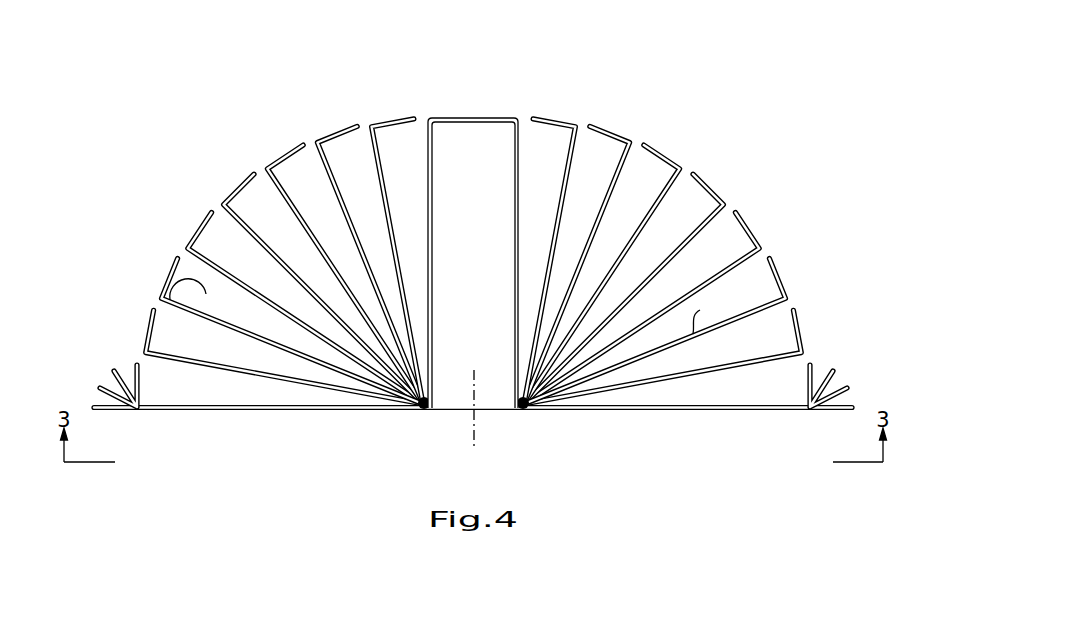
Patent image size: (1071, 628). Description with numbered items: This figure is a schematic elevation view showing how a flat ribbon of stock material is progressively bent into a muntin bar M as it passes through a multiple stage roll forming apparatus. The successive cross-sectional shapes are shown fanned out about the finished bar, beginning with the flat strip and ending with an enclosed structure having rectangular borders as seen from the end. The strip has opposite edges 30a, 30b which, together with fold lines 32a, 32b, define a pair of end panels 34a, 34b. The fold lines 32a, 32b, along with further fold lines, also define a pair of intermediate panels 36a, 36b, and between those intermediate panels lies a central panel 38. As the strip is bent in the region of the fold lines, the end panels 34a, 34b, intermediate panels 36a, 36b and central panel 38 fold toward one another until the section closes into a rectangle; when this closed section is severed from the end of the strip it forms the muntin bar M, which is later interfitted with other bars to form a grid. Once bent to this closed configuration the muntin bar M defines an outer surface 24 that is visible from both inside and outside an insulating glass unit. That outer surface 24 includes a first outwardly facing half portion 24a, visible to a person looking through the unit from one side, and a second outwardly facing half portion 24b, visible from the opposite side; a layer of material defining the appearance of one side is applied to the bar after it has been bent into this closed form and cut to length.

The outer surface 24 is at (406, 416).
The first outwardly facing half portion 24a is at (428, 176).
The second outwardly facing half portion 24b is at (517, 182).
The edge 30a is at (363, 121).
The edge 30b is at (531, 118).
The fold line 32a is at (157, 299).
The fold line 32b is at (790, 298).
The end panel 34a is at (168, 268).
The end panel 34b is at (782, 276).
The intermediate panel 36a is at (205, 297).
The intermediate panel 36b is at (718, 312).
The central panel 38 is at (462, 402).
The muntin bar M is at (470, 100).